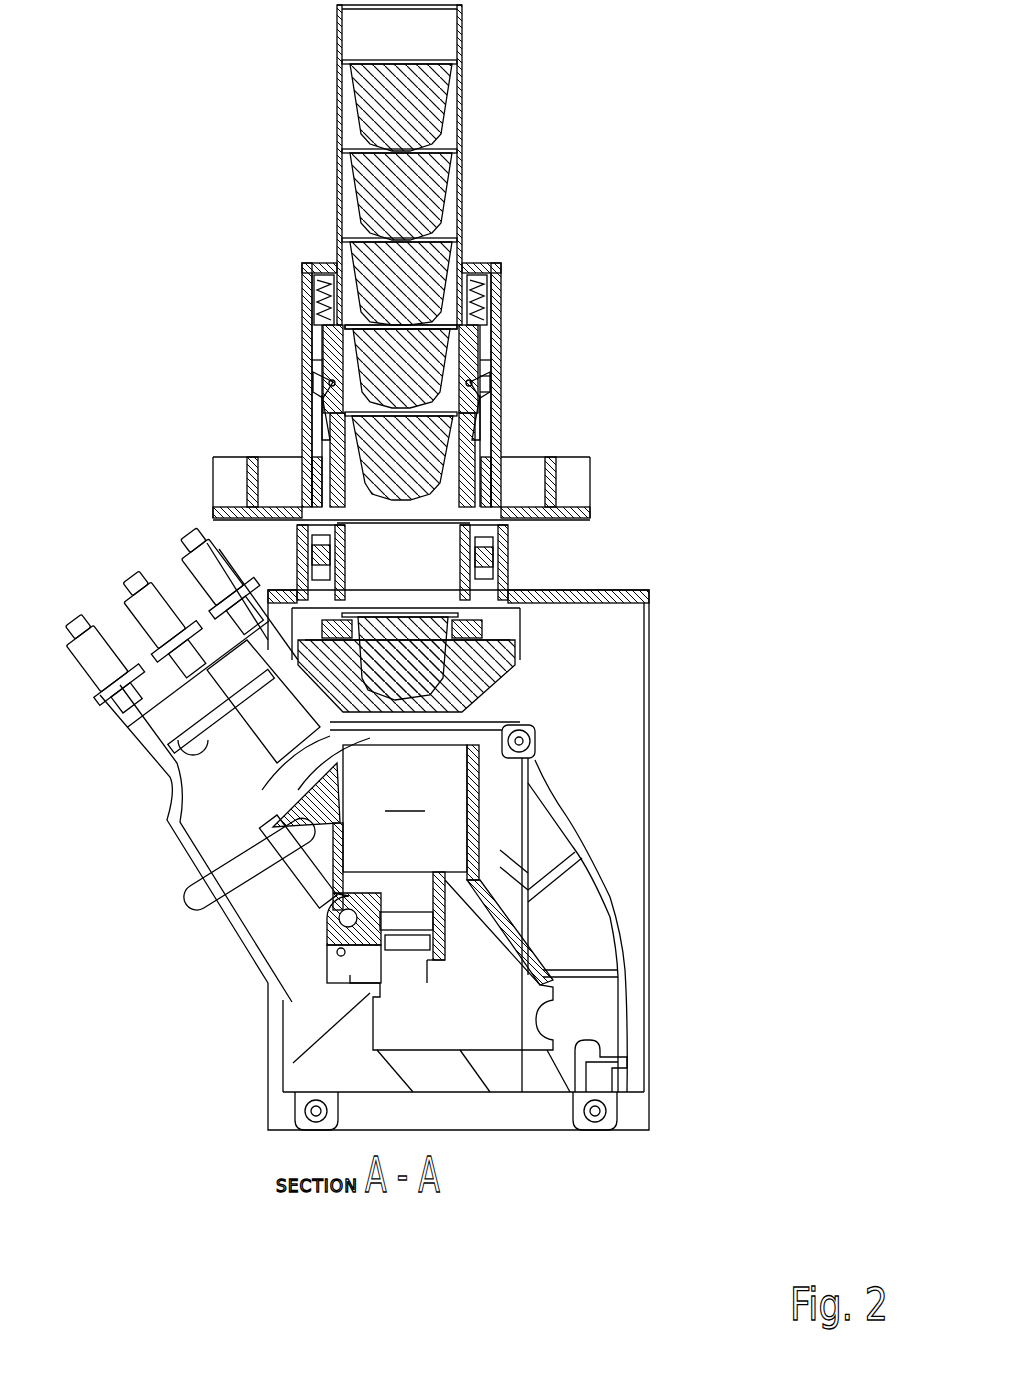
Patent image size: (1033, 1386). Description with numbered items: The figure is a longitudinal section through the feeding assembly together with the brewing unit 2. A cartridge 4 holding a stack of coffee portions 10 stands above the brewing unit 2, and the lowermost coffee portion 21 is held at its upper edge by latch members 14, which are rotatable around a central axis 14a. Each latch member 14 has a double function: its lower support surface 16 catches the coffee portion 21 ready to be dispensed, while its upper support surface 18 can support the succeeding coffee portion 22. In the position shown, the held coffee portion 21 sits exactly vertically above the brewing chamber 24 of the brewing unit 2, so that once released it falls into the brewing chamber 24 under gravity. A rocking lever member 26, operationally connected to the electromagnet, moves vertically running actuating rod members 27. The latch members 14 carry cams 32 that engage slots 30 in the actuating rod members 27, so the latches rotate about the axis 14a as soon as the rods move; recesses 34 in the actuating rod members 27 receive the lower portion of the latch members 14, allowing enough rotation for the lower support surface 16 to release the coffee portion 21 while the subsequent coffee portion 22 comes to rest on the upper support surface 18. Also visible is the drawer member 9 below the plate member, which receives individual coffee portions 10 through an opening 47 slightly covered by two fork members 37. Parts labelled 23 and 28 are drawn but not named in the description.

The brewing unit 2 is at (668, 865).
The cartridge 4 is at (463, 36).
The drawer member 9 is at (540, 668).
The coffee portions 10 is at (418, 680).
The latch members 14 is at (303, 330).
The central axis 14a is at (303, 367).
The lower support surface 16 is at (303, 403).
The upper support surface 18 is at (503, 320).
The coffee portion ready to be dispensed 21 is at (357, 445).
The succeeding coffee portion 22 is at (418, 355).
The stacked cups 23 is at (418, 262).
The brewing chamber 24 is at (376, 864).
The rocking lever member 26 is at (482, 552).
The actuating rod members 27 is at (320, 487).
The separator housing 28 is at (500, 270).
The slots 30 is at (502, 377).
The cams 32 is at (502, 392).
The recesses 34 is at (320, 448).
The fork members 37 is at (466, 630).
The opening 47 is at (457, 680).